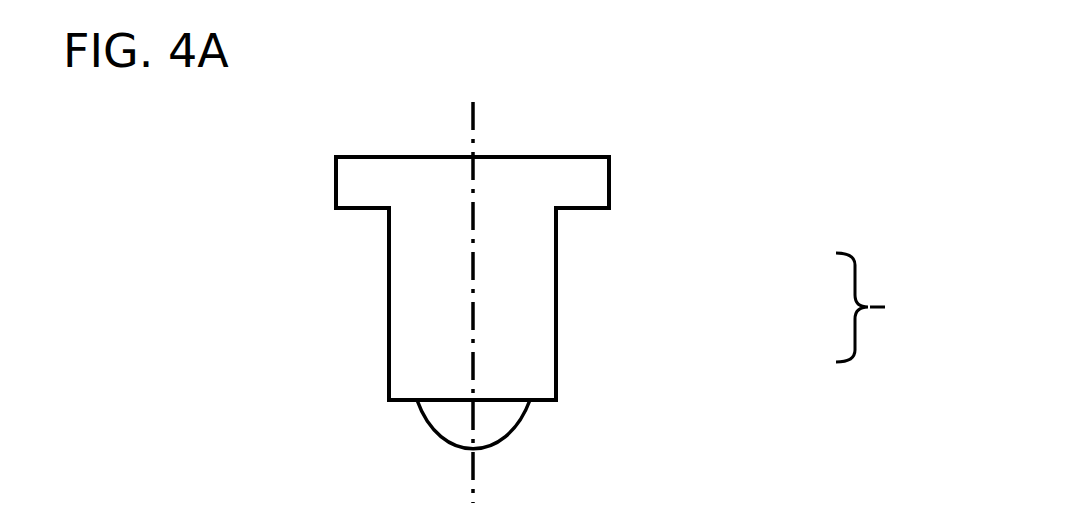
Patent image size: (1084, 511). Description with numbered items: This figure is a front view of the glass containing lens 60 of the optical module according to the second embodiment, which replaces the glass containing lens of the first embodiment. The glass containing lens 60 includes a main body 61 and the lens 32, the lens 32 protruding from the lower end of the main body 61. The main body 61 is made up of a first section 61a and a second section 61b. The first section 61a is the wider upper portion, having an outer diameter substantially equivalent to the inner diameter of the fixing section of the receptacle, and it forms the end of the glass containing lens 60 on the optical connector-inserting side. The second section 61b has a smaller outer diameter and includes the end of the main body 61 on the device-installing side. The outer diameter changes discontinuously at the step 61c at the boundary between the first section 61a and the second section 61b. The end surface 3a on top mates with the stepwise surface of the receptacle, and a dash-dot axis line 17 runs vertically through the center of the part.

The glass containing lens 60 is at (397, 302).
The main body 61 is at (886, 307).
The first section 61a is at (609, 184).
The second section 61b is at (556, 307).
The step 61c is at (360, 208).
The end surface 3a is at (533, 156).
The lens 32 is at (493, 418).
The axis line 17 is at (475, 118).